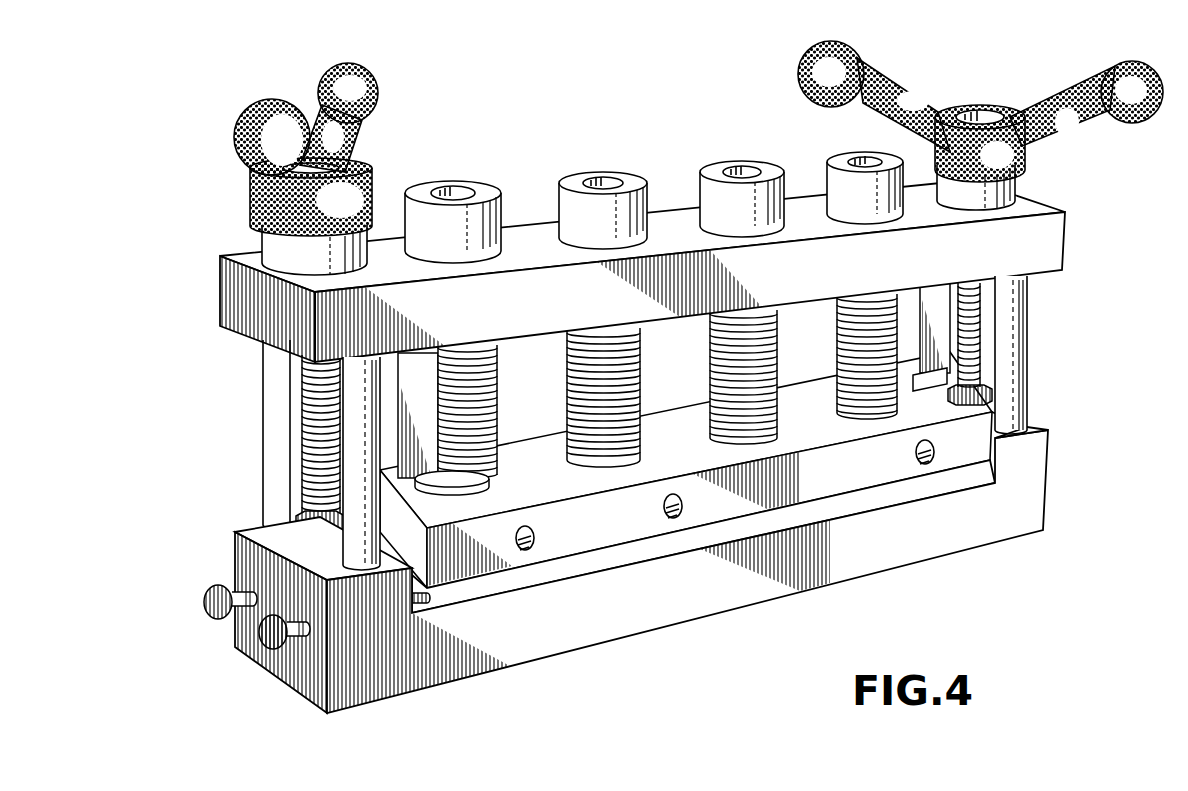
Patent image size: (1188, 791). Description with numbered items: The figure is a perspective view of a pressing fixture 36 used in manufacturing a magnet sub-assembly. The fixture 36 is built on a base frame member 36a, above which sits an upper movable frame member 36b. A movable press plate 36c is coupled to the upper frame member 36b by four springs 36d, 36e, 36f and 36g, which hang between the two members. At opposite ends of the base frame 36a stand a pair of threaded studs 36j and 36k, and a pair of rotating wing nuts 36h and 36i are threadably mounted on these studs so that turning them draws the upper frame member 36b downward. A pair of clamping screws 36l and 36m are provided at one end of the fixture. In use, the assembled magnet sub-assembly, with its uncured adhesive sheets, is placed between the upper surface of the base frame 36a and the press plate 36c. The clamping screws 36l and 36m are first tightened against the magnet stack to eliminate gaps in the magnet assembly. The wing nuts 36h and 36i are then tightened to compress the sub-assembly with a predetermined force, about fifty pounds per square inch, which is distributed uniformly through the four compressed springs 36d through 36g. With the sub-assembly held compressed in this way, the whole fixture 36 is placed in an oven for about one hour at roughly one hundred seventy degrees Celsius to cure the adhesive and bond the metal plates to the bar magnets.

The pressing fixture 36 is at (192, 252).
The base frame member 36a is at (236, 551).
The upper movable frame member 36b is at (221, 292).
The movable press plate 36c is at (897, 466).
The spring 36d is at (496, 398).
The spring 36e is at (568, 409).
The spring 36f is at (709, 356).
The spring 36g is at (838, 348).
The wing nut 36h is at (264, 104).
The wing nut 36i is at (843, 58).
The threaded stud 36j is at (302, 410).
The threaded stud 36k is at (985, 348).
The clamping screw 36l is at (204, 594).
The clamping screw 36m is at (262, 633).